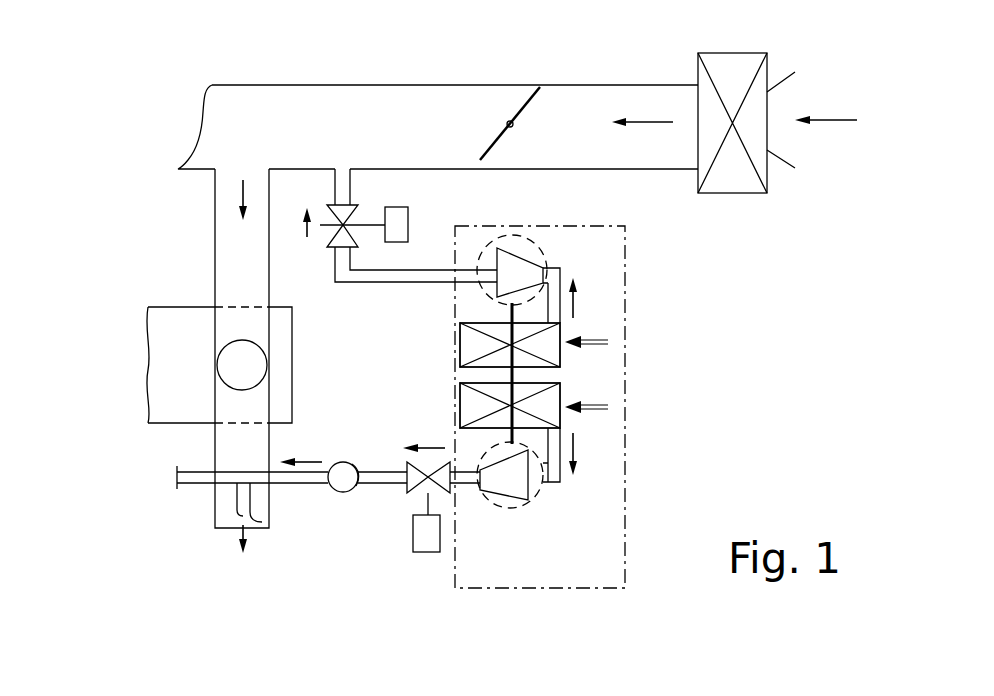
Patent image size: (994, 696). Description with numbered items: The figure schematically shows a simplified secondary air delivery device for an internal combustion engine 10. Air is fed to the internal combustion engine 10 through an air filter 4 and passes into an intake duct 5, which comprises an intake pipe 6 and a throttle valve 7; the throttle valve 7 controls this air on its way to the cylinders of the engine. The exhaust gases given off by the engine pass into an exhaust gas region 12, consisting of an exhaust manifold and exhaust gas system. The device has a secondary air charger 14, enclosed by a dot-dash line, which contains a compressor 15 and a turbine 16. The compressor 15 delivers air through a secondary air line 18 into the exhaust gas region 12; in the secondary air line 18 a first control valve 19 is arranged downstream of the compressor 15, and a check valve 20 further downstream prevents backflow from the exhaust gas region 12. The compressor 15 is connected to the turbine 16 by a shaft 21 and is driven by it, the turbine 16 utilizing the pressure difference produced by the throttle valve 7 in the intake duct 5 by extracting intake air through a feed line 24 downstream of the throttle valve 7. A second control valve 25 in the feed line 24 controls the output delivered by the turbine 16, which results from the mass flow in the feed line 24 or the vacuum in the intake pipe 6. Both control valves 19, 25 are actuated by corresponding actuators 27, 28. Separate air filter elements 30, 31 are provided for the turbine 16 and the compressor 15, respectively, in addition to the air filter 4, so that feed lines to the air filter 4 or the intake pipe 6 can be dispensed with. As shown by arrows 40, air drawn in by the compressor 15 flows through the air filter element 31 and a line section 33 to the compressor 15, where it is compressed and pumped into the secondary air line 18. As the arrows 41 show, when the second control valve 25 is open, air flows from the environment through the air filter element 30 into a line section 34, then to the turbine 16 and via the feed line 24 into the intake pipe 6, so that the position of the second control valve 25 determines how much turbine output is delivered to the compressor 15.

The air filter 4 is at (737, 182).
The intake duct 5 is at (256, 130).
The intake pipe 6 is at (340, 85).
The throttle valve 7 is at (526, 100).
The internal combustion engine 10 is at (163, 380).
The exhaust gas region 12 is at (222, 511).
The secondary air charger 14 is at (545, 574).
The compressor 15 is at (500, 503).
The turbine 16 is at (533, 243).
The secondary air line 18 is at (383, 480).
The first control valve 19 is at (410, 489).
The check valve 20 is at (343, 493).
The shaft 21 is at (465, 377).
The feed line 24 is at (357, 276).
The second control valve 25 is at (333, 248).
The actuator 27 is at (400, 218).
The actuator 28 is at (428, 548).
The air filter element 30 is at (472, 345).
The air filter element 31 is at (472, 408).
The line section 33 is at (553, 486).
The line section 34 is at (558, 268).
The arrows 40 is at (313, 460).
The arrows 41 is at (296, 238).